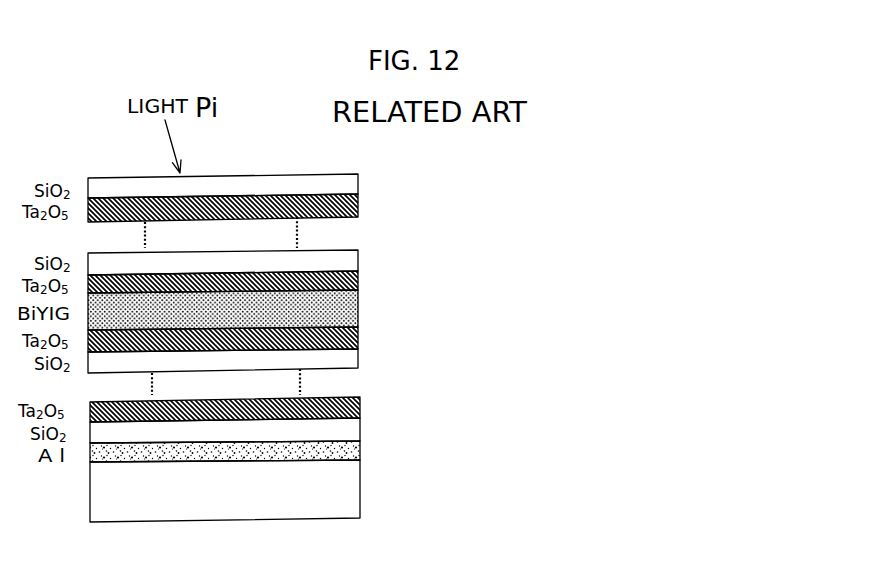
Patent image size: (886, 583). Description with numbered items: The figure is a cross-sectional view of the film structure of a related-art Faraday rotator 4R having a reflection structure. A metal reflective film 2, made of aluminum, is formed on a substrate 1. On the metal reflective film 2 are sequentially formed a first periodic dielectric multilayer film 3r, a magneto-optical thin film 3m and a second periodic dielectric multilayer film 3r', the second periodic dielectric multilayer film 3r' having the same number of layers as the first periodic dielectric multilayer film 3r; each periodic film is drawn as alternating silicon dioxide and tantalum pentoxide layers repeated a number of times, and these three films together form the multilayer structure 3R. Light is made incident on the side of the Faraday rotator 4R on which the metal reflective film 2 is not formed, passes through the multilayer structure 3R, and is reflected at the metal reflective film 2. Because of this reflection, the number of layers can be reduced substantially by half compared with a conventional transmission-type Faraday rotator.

The substrate 1 is at (345, 498).
The metal reflective film 2 is at (360, 445).
The magneto-optical thin film 3m is at (360, 313).
The first periodic dielectric multilayer film 3r is at (410, 385).
The second periodic dielectric multilayer film 3r' is at (421, 228).
The magneto-optical multilayer structure 3R is at (455, 308).
The Faraday rotator 4R is at (481, 357).